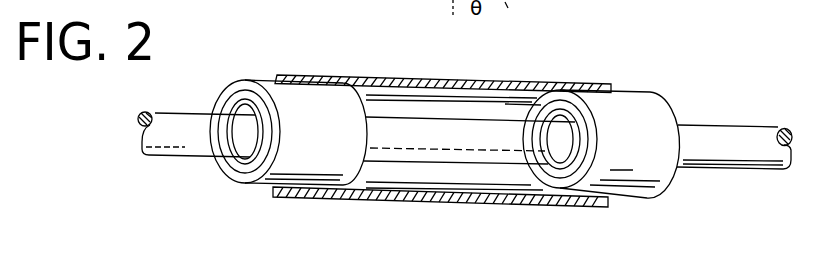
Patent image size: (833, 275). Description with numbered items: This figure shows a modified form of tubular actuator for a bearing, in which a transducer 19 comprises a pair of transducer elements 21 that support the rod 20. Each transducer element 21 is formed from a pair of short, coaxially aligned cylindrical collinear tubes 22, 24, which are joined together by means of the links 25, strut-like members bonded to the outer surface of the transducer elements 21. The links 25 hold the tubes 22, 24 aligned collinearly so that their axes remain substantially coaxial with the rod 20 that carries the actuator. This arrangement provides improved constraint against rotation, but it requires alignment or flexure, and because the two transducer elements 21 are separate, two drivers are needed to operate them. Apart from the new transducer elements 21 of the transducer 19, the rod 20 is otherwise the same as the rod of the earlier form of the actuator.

The transducer 19 is at (314, 46).
The rod 20 is at (163, 112).
The transducer element 21 is at (244, 65).
The collinear tube 22 is at (223, 172).
The collinear tube 24 is at (235, 187).
The link 25 is at (393, 200).